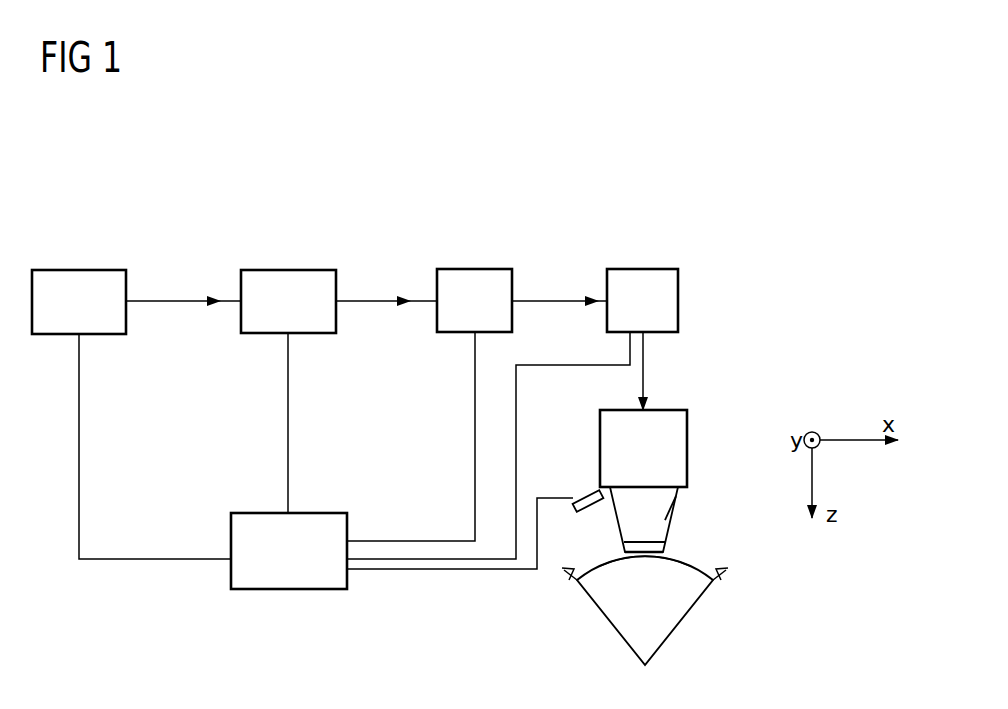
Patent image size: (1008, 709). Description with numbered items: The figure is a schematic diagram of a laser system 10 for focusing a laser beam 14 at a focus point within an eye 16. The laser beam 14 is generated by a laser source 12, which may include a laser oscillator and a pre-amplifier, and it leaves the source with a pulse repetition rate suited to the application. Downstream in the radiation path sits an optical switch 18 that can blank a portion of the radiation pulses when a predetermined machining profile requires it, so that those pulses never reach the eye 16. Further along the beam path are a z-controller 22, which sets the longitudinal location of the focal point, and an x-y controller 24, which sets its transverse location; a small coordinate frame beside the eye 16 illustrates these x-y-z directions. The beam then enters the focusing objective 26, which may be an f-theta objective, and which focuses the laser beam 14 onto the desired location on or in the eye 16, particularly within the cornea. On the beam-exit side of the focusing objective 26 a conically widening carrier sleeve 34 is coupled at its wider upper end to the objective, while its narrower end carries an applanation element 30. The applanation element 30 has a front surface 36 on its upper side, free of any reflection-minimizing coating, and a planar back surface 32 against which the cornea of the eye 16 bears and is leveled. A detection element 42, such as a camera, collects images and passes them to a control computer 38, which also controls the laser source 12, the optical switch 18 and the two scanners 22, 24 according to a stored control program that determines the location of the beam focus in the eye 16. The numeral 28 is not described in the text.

The laser system 10 is at (401, 213).
The laser source 12 is at (80, 270).
The laser beam 14 is at (180, 300).
The eye 16 is at (680, 608).
The optical switch 18 is at (290, 270).
The z-controller 22 is at (474, 269).
The x-y controller 24 is at (641, 269).
The focusing objective 26 is at (687, 445).
The objective housing 28 is at (679, 497).
The applanation element 30 is at (624, 547).
The back surface 32 is at (650, 556).
The carrier sleeve 34 is at (663, 520).
The front surface 36 is at (642, 541).
The control computer 38 is at (262, 513).
The detection element 42 is at (581, 500).